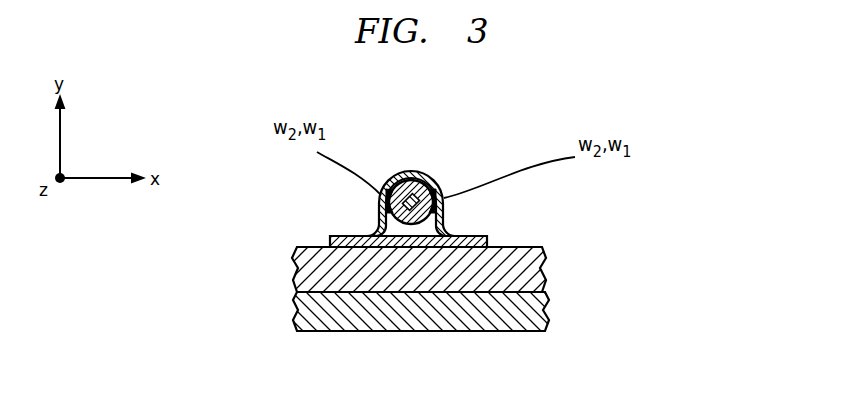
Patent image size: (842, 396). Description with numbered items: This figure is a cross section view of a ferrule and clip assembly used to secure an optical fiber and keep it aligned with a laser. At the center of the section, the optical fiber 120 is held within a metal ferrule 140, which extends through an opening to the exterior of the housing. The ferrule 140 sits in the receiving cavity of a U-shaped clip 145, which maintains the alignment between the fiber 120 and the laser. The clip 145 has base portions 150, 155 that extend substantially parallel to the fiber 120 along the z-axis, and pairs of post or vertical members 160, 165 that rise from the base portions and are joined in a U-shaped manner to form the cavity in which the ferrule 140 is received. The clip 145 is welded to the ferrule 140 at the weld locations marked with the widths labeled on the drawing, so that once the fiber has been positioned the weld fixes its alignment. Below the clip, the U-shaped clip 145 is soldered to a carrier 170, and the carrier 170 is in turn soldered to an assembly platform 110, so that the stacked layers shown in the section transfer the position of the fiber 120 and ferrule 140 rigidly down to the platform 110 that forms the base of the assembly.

The assembly platform 110 is at (307, 315).
The optical fiber 120 is at (406, 186).
The metal ferrule 140 is at (410, 181).
The U-shaped clip 145 is at (438, 178).
The base portion 150 is at (328, 238).
The base portion 155 is at (488, 243).
The vertical member 160 is at (450, 216).
The vertical member 165 is at (379, 212).
The carrier 170 is at (520, 277).